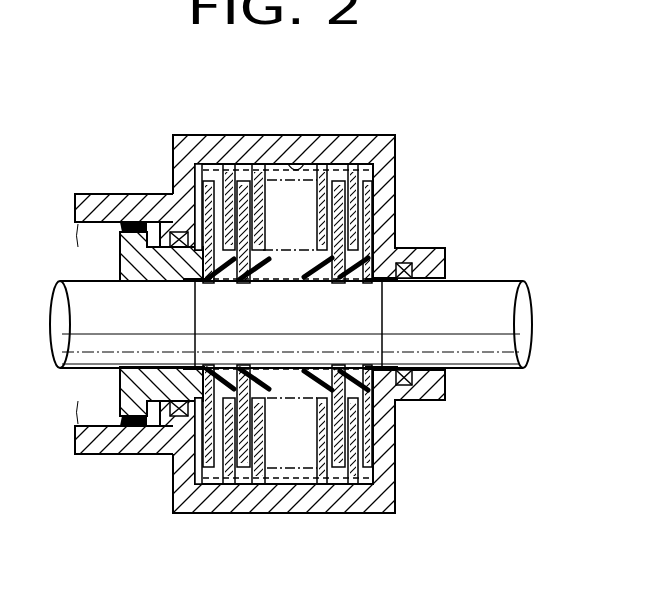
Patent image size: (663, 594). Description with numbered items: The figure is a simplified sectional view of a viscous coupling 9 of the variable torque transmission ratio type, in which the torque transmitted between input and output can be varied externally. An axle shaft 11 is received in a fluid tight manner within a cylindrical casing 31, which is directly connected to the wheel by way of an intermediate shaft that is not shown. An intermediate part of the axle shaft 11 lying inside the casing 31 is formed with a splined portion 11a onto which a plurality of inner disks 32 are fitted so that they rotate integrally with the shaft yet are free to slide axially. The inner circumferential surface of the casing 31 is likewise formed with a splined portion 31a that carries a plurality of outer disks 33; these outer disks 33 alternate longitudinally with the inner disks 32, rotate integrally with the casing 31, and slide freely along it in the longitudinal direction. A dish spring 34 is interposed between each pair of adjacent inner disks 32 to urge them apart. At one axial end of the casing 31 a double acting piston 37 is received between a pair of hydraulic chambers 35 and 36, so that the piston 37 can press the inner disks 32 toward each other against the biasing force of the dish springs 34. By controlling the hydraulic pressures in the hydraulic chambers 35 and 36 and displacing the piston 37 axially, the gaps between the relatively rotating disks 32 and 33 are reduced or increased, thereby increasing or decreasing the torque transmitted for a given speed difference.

The viscous coupling 9 is at (421, 121).
The axle shaft 11 is at (481, 282).
The splined portion 11a is at (296, 280).
The cylindrical casing 31 is at (186, 133).
The splined portion 31a is at (298, 164).
The inner disks 32 is at (240, 460).
The outer disks 33 is at (350, 460).
The dish spring 34 is at (317, 375).
The hydraulic chamber 35 is at (112, 418).
The hydraulic chamber 36 is at (153, 414).
The double acting piston 37 is at (118, 266).